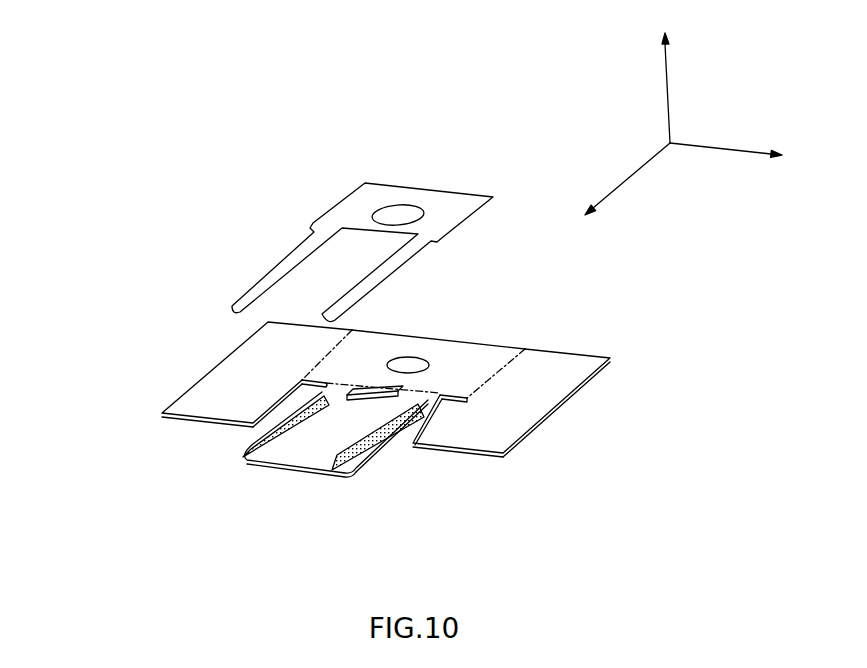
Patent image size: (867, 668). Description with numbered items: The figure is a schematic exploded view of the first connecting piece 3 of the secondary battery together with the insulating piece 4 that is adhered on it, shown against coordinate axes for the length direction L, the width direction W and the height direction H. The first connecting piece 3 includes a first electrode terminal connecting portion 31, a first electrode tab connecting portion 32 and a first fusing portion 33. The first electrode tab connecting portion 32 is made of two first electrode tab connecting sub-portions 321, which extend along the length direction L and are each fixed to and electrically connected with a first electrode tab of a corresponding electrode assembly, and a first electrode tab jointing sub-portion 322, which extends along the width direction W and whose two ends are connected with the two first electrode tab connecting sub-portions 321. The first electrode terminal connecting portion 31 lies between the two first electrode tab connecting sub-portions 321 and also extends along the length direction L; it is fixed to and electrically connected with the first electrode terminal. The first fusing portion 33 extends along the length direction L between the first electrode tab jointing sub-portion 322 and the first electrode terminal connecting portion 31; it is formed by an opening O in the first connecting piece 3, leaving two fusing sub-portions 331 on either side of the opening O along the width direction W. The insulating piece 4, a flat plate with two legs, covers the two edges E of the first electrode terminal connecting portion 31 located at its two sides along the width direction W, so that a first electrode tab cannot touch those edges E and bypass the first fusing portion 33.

The first connecting piece 3 is at (108, 448).
The insulating piece 4 is at (290, 260).
The first electrode terminal connecting portion 31 is at (334, 475).
The first electrode tab connecting portion 32 is at (430, 389).
The first electrode tab connecting sub-portion 321 is at (207, 387).
The first electrode tab jointing sub-portion 322 is at (433, 368).
The first fusing portion 33 is at (359, 477).
The fusing sub-portion 331 is at (365, 460).
The edge E is at (260, 442).
The opening O is at (372, 389).
The height direction H is at (657, 86).
The width direction W is at (732, 137).
The length direction L is at (626, 179).